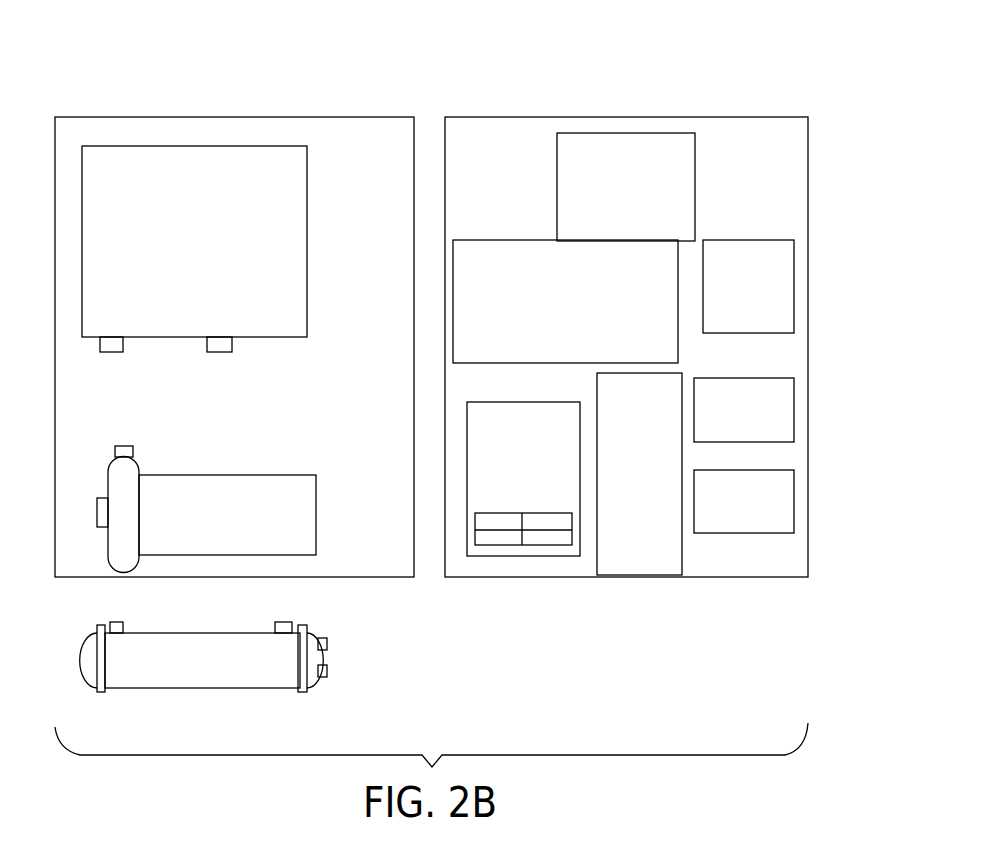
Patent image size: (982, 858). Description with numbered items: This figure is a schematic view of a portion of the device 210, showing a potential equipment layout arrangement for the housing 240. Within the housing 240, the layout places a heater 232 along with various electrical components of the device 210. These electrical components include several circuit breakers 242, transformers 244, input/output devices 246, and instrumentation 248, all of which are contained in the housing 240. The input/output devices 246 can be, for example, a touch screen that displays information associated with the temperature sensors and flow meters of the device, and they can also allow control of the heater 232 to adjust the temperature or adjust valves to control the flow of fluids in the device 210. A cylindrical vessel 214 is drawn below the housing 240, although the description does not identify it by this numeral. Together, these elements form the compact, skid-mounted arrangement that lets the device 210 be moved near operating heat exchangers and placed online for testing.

The device 210 is at (830, 113).
The horizontal heat exchanger / storage vessel 214 is at (223, 688).
The heater 232 is at (225, 146).
The housing 240 is at (718, 117).
The circuit breakers 242 is at (478, 500).
The transformers 244 is at (658, 577).
The input/output devices 246 is at (695, 197).
The instrumentation 248 is at (530, 240).